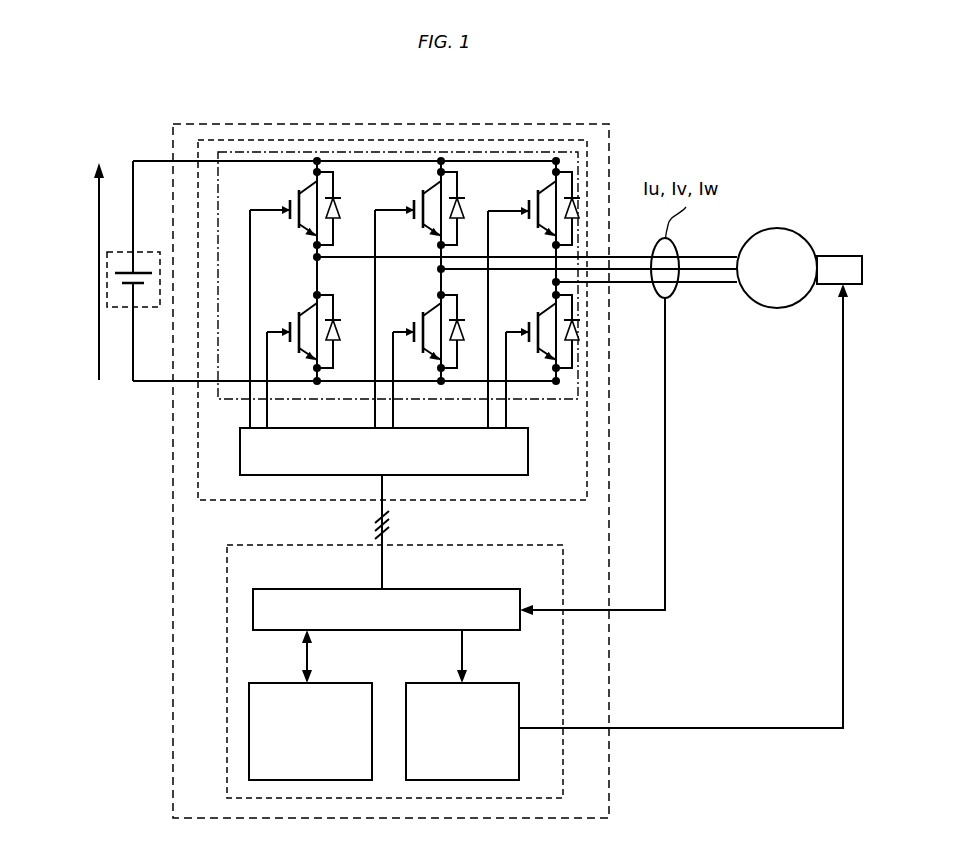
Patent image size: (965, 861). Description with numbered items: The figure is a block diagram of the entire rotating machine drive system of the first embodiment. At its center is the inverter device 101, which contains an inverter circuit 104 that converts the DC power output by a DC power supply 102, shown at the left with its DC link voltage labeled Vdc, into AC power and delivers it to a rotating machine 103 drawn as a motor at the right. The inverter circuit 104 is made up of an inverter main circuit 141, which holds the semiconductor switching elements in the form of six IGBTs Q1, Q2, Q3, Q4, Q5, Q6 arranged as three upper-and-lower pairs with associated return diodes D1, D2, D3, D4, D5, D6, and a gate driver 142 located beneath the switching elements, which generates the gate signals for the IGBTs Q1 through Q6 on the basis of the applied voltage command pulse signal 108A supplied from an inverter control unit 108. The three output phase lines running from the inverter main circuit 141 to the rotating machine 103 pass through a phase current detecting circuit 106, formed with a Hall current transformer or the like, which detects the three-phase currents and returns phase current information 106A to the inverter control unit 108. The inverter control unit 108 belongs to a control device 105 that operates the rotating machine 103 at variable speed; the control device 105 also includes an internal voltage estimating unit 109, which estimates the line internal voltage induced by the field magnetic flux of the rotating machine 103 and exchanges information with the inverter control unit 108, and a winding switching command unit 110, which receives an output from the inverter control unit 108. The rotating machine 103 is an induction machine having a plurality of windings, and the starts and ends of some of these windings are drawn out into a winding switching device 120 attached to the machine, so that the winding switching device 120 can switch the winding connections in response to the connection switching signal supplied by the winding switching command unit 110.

The inverter device 101 is at (173, 138).
The DC power supply 102 is at (107, 253).
The rotating machine 103 is at (798, 238).
The inverter circuit 104 is at (530, 141).
The control device 105 is at (253, 543).
The phase current detecting circuit 106 is at (678, 292).
The phase current information 106A is at (665, 452).
The inverter control unit 108 is at (480, 589).
The applied voltage command pulse signal 108A is at (388, 522).
The internal voltage estimating unit 109 is at (332, 682).
The winding switching command unit 110 is at (495, 682).
The winding switching device 120 is at (862, 272).
The inverter main circuit 141 is at (365, 152).
The gate driver 142 is at (528, 452).
The IGBT Q1 is at (296, 191).
The IGBT Q2 is at (305, 312).
The IGBT Q3 is at (420, 191).
The IGBT Q4 is at (432, 312).
The IGBT Q5 is at (534, 191).
The IGBT Q6 is at (545, 312).
The diode D1 is at (341, 202).
The diode D2 is at (343, 324).
The diode D3 is at (466, 202).
The diode D4 is at (466, 324).
The diode D5 is at (578, 200).
The diode D6 is at (576, 324).
The DC voltage Vdc is at (99, 318).